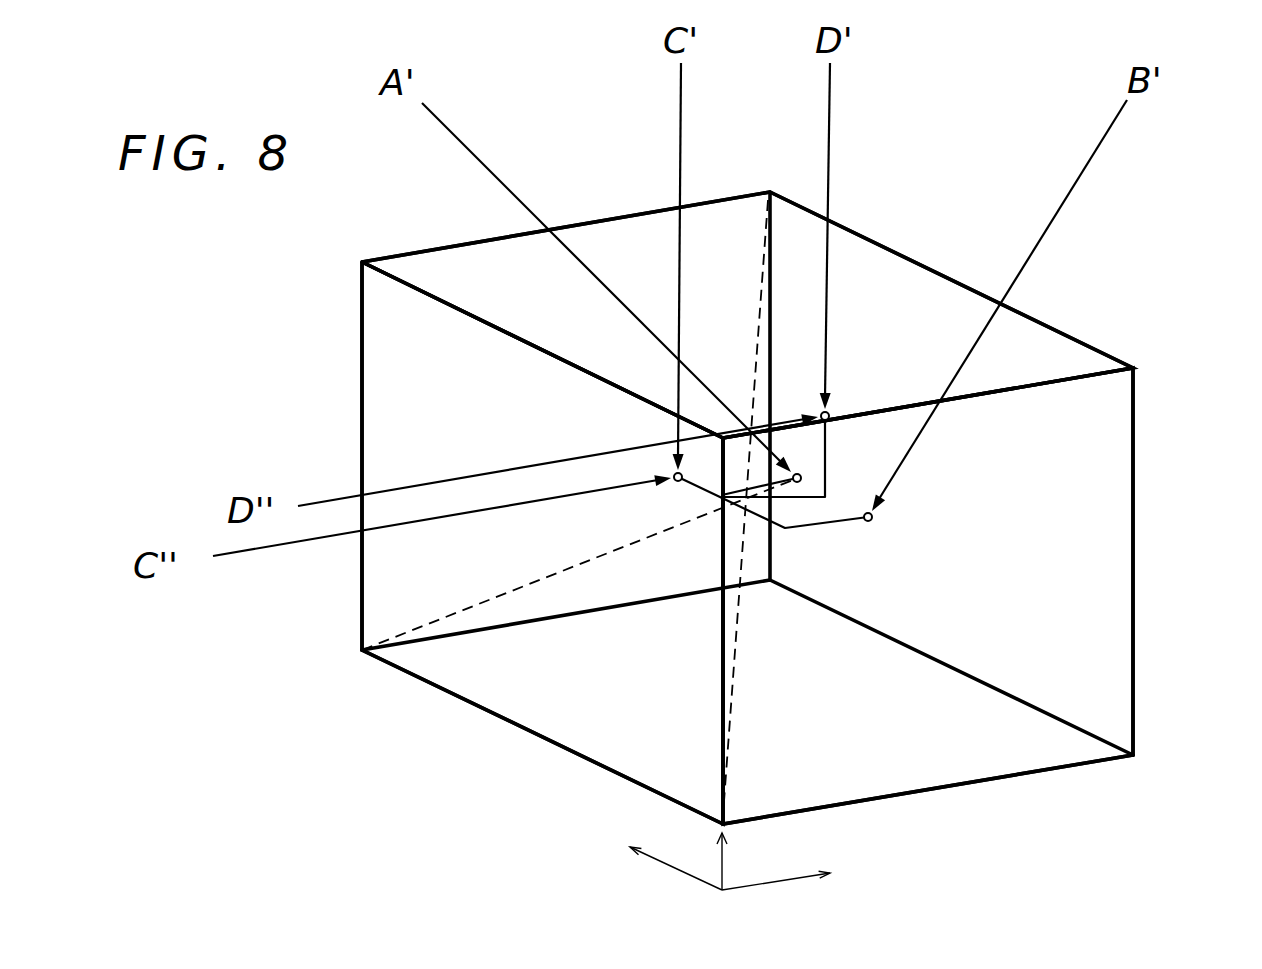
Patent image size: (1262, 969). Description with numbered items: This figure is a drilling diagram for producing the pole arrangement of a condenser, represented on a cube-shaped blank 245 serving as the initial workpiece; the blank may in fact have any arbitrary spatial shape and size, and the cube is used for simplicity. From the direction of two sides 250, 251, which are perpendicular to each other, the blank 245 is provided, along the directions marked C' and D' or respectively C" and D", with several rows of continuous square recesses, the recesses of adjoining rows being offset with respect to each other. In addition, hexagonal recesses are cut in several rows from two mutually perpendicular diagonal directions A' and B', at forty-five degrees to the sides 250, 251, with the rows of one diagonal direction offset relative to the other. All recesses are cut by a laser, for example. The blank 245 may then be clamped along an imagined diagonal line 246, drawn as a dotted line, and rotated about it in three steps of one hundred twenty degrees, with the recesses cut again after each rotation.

The cube-shaped blank 245 is at (1098, 347).
The imagined diagonal line 246 is at (1097, 380).
The side 250 is at (883, 290).
The side 251 is at (380, 323).